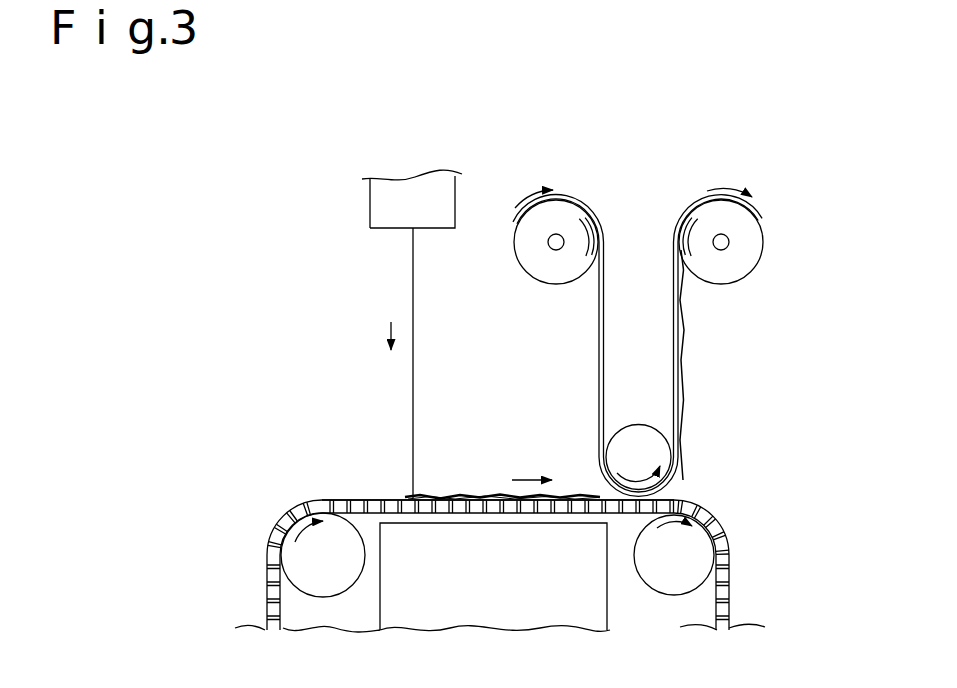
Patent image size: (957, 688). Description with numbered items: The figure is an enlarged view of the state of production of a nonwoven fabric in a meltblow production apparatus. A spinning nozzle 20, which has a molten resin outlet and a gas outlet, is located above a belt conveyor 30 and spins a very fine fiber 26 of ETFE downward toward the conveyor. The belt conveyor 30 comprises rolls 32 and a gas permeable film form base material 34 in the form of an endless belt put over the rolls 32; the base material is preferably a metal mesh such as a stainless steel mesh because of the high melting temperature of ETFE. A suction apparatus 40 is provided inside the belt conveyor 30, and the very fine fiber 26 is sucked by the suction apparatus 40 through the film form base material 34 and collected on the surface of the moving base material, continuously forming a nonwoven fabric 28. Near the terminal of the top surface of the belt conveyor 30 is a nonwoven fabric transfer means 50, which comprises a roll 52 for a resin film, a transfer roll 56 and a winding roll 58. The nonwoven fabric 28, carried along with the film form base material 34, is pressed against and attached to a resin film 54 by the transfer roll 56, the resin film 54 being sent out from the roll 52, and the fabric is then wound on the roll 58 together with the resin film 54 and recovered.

The spinning nozzle 20 is at (368, 196).
The very fine fiber 26 is at (414, 384).
The nonwoven fabric 28 is at (460, 495).
The belt conveyor 30 is at (733, 593).
The rolls 32 is at (293, 552).
The film form base material 34 is at (350, 498).
The suction apparatus 40 is at (378, 605).
The nonwoven fabric transfer means 50 is at (690, 176).
The roll for a resin film 52 is at (577, 204).
The resin film 54 is at (673, 310).
The transfer roll 56 is at (657, 447).
The roll 58 is at (757, 208).